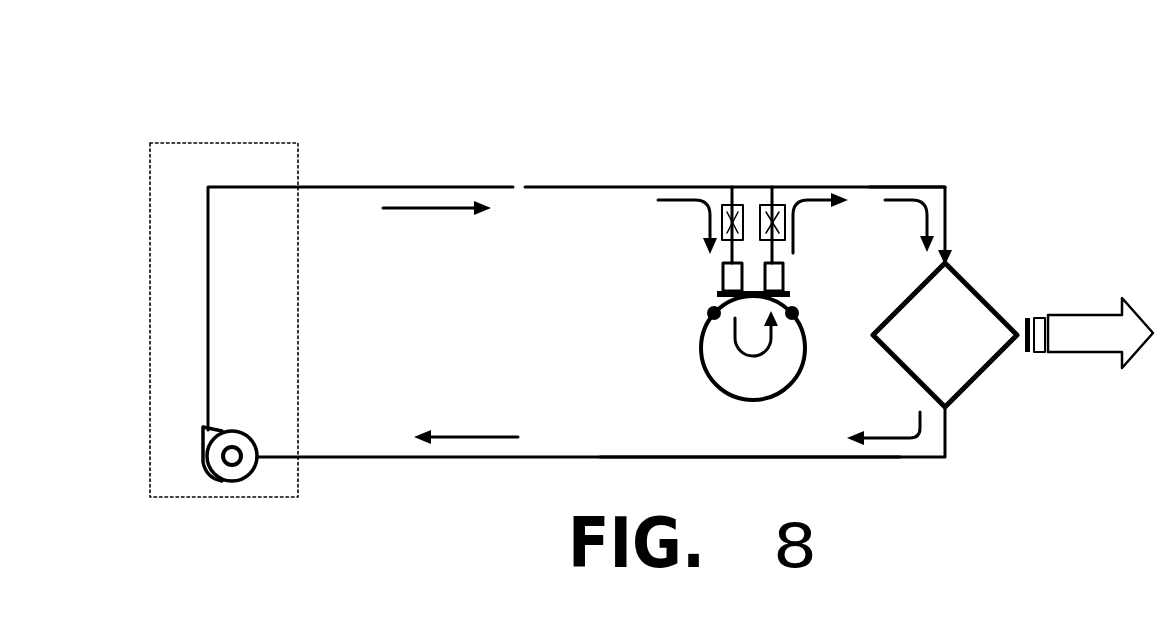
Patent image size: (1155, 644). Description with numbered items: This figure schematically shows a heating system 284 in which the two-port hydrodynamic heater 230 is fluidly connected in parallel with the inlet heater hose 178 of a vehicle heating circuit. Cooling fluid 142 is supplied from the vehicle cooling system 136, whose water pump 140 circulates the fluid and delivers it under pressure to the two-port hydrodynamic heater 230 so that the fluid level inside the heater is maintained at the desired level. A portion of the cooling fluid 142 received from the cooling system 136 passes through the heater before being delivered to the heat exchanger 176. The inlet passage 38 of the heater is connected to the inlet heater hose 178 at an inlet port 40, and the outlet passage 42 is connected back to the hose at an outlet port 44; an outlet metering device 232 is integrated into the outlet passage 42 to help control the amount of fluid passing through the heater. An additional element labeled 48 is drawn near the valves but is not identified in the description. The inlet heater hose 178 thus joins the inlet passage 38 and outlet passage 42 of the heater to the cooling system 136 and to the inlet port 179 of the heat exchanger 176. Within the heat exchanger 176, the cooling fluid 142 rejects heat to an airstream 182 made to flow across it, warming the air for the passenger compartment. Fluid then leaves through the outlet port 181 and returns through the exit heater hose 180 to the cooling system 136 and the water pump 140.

The vehicle cooling system 136 is at (300, 163).
The water pump 140 is at (229, 482).
The cooling fluid 142 is at (472, 437).
The exit heater hose 180 is at (488, 458).
The heating system 284 is at (650, 99).
The inlet port 40 is at (735, 186).
The outlet port 44 is at (773, 187).
The outlet metering device 232 is at (790, 197).
The sensor 48 is at (721, 190).
The inlet passage 38 is at (723, 282).
The outlet passage 42 is at (786, 282).
The two-port hydrodynamic heater 230 is at (700, 365).
The inlet heater hose 178 is at (862, 187).
The inlet port 179 is at (948, 263).
The heat exchanger 176 is at (979, 296).
The airstream 182 is at (1090, 352).
The outlet port 181 is at (948, 413).